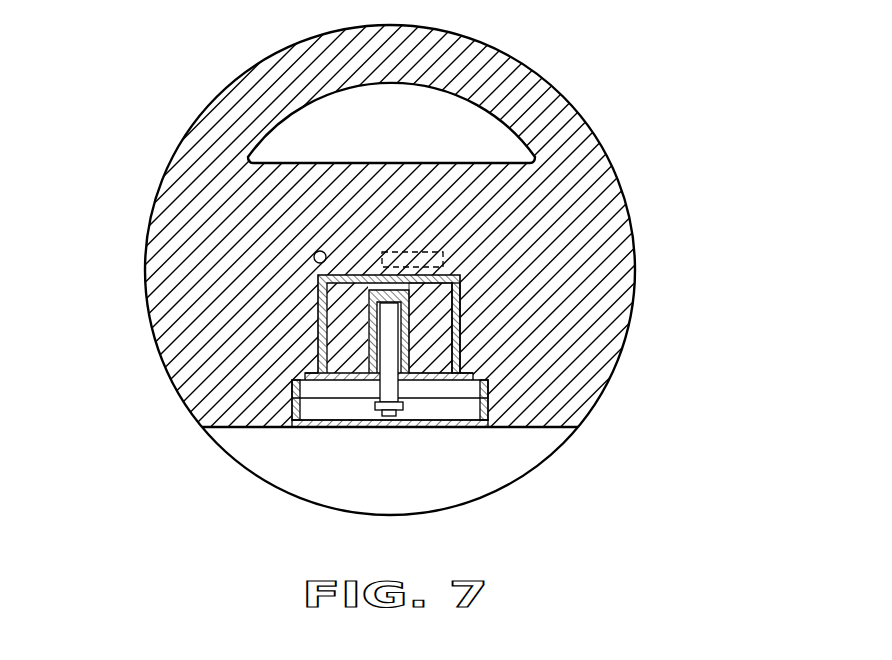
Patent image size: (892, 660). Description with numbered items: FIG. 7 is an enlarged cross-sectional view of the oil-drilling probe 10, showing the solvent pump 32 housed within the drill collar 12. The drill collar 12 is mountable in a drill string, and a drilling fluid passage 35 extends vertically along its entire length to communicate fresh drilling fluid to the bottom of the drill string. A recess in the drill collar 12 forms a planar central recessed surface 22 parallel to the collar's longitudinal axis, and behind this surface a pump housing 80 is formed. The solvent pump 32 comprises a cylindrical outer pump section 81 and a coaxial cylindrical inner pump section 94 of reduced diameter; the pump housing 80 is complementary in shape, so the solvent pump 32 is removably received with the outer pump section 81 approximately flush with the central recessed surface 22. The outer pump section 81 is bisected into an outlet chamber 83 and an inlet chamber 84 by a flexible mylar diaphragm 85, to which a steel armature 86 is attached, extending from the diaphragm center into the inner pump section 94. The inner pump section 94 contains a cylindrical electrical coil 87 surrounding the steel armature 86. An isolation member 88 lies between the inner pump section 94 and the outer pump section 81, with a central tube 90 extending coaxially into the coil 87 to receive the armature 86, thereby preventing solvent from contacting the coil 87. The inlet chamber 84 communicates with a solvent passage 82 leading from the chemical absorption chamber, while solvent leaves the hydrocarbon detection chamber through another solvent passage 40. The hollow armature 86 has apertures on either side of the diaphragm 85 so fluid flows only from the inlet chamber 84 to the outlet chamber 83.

The oil-drilling probe 10 is at (198, 92).
The drill collar 12 is at (580, 437).
The central recessed surface 22 is at (532, 430).
The solvent pump 32 is at (399, 440).
The drilling fluid passage 35 is at (407, 141).
The solvent passage 40 is at (313, 253).
The pump housing 80 is at (320, 317).
The outer pump section 81 is at (318, 374).
The solvent passage 82 is at (433, 264).
The outlet chamber 83 is at (345, 403).
The inlet chamber 84 is at (452, 415).
The flexible mylar diaphragm 85 is at (357, 388).
The steel armature 86 is at (366, 392).
The electrical coil 87 is at (442, 355).
The isolation member 88 is at (418, 392).
The central tube 90 is at (366, 355).
The inner pump section 94 is at (457, 310).